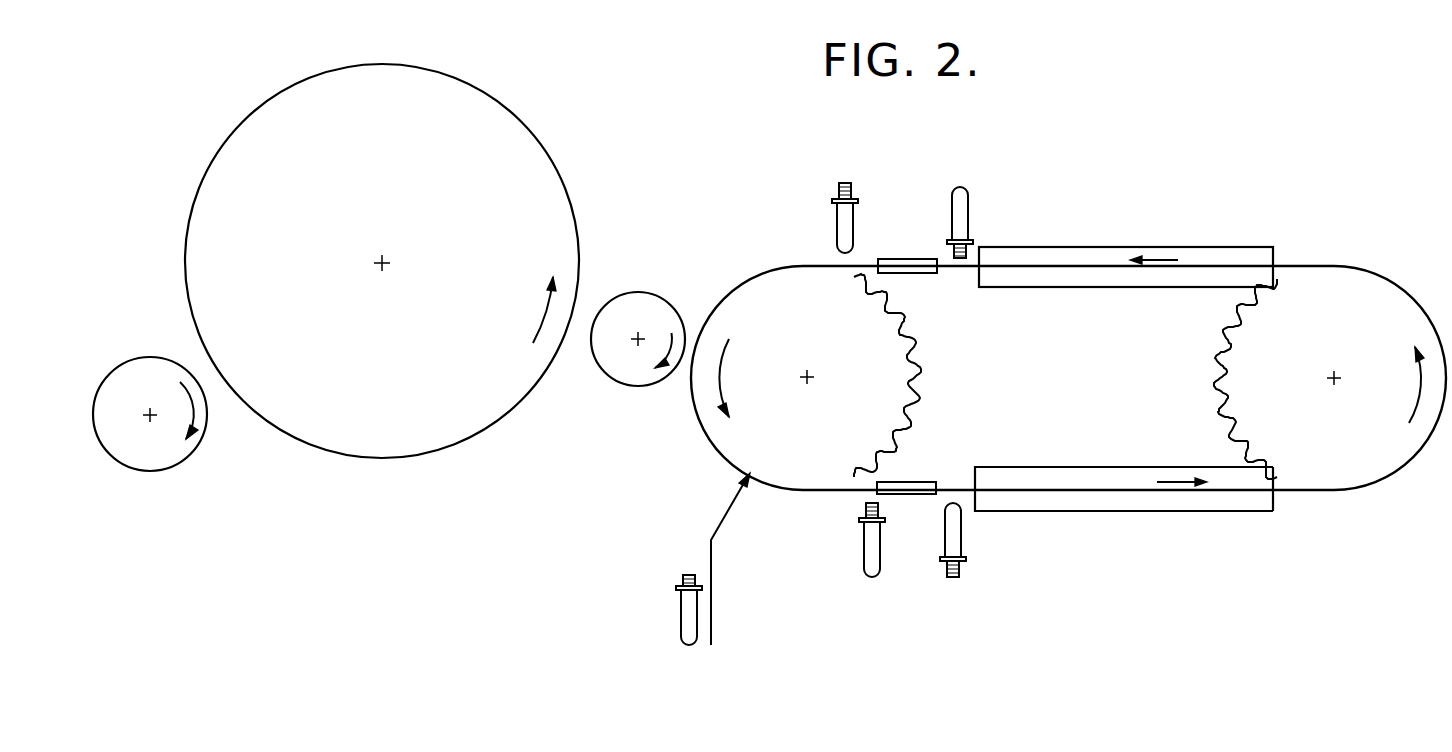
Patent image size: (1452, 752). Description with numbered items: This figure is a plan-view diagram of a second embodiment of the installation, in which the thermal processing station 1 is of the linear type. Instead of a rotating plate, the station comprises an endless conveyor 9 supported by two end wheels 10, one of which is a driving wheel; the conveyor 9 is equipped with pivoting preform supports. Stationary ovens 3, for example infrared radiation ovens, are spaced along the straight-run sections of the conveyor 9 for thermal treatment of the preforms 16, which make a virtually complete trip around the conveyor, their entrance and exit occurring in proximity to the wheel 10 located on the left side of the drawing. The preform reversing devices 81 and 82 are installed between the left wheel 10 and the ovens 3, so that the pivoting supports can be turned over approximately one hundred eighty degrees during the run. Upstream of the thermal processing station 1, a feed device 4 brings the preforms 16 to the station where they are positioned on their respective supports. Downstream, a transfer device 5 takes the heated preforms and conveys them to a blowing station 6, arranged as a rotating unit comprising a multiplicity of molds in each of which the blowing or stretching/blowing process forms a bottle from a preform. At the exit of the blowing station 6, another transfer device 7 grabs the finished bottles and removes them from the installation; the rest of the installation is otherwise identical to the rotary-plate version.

The thermal processing station 1 is at (1292, 248).
The ovens 3 is at (1081, 250).
The feed device 4 is at (706, 553).
The transfer device 5 is at (638, 303).
The blowing station 6 is at (412, 90).
The transfer device 7 is at (150, 372).
The preform reversing device 81 is at (910, 495).
The preform reversing device 82 is at (910, 258).
The endless conveyor 9 is at (1244, 493).
The end wheels 10 is at (872, 390).
The preforms 16 is at (970, 195).